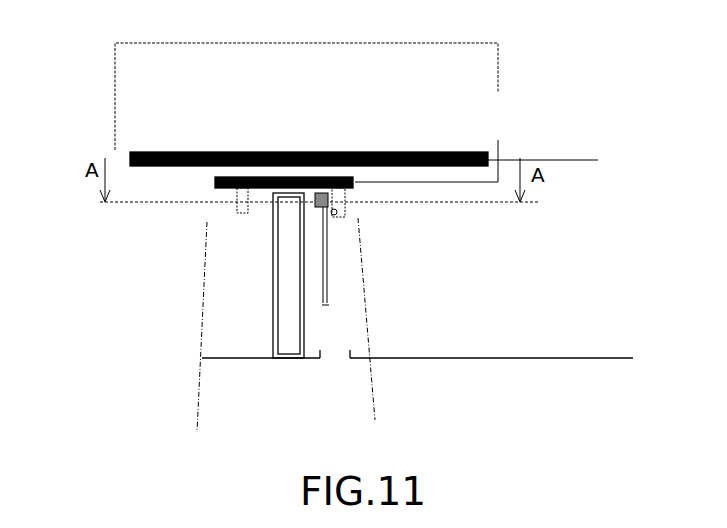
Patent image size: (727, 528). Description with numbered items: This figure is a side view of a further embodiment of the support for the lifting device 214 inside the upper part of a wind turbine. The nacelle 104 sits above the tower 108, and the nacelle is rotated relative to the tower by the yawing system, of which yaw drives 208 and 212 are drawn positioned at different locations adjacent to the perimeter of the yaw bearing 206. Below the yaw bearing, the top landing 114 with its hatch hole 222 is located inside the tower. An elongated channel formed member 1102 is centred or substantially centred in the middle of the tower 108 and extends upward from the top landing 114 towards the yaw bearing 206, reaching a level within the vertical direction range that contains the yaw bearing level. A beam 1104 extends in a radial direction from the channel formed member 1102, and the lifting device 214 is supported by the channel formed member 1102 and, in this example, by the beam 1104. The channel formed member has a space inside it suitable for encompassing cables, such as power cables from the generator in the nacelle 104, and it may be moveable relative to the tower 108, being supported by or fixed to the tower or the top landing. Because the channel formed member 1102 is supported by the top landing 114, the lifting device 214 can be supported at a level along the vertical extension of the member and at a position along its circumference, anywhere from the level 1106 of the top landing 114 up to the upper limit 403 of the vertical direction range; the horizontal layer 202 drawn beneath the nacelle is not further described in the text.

The nacelle 104 is at (498, 66).
The substrate 202 is at (488, 152).
The upper vertical direction range limit 403 is at (575, 160).
The yaw bearing 206 is at (215, 182).
The yaw drive 208 is at (237, 213).
The beam 1104 is at (313, 202).
The lifting device 214 is at (321, 192).
The yaw drive 212 is at (345, 217).
The hatch hole 222 is at (333, 360).
The level of the top landing 1106 is at (597, 358).
The elongated channel formed member 1102 is at (273, 325).
The tower 108 is at (372, 392).
The top landing 114 is at (232, 360).